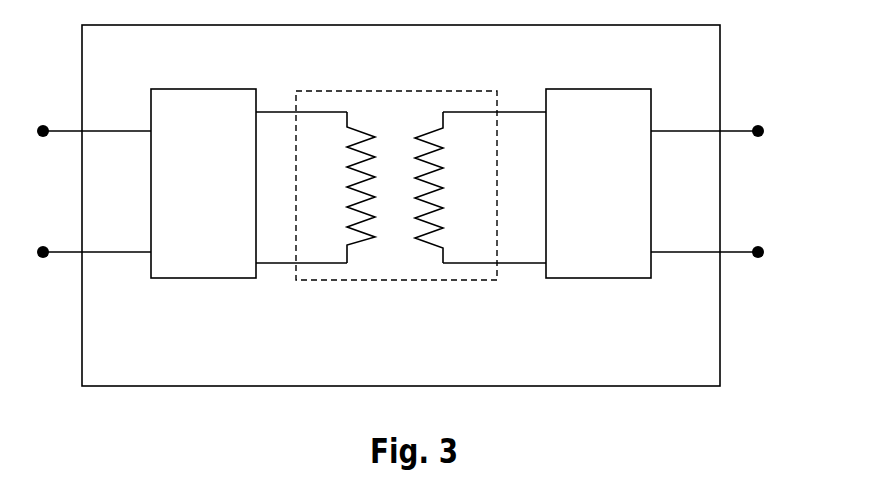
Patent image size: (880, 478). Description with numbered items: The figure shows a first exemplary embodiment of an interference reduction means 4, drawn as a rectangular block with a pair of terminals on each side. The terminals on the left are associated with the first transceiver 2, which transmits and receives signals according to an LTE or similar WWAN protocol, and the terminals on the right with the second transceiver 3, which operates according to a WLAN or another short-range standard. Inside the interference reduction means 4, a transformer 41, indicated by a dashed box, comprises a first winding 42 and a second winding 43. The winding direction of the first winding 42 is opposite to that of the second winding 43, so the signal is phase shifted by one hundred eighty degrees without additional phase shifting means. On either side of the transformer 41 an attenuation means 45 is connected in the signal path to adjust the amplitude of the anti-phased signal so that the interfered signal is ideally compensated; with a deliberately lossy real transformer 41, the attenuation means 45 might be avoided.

The first transceiver 2 is at (91, 191).
The second transceiver 3 is at (713, 191).
The interference reduction means 4 is at (720, 40).
The transformer 41 is at (472, 280).
The first winding 42 is at (360, 243).
The second winding 43 is at (442, 112).
The attenuation means 45 is at (205, 278).